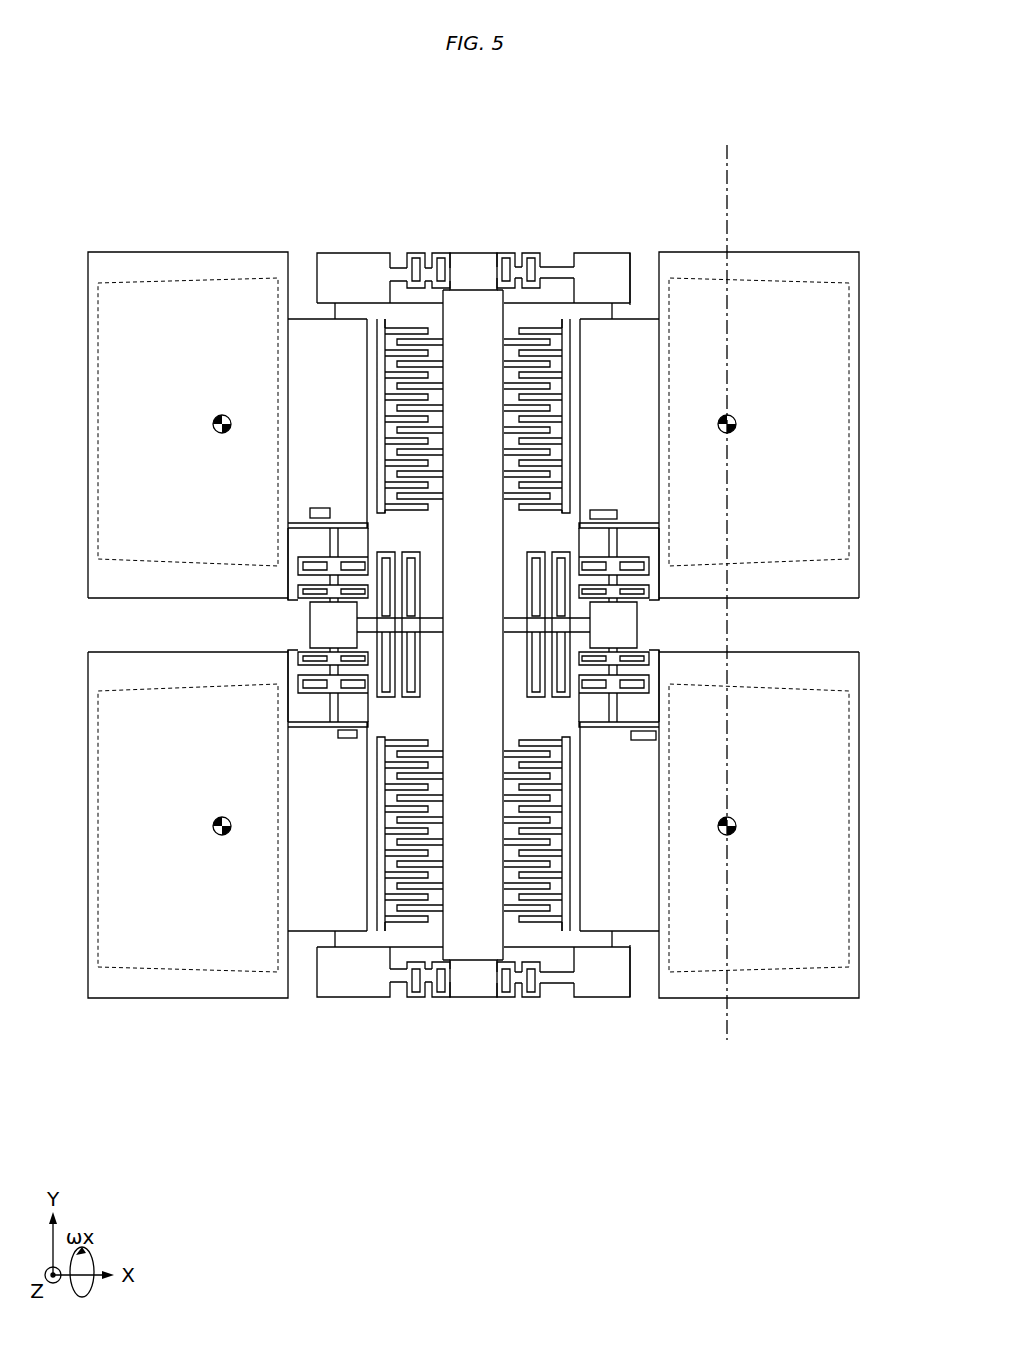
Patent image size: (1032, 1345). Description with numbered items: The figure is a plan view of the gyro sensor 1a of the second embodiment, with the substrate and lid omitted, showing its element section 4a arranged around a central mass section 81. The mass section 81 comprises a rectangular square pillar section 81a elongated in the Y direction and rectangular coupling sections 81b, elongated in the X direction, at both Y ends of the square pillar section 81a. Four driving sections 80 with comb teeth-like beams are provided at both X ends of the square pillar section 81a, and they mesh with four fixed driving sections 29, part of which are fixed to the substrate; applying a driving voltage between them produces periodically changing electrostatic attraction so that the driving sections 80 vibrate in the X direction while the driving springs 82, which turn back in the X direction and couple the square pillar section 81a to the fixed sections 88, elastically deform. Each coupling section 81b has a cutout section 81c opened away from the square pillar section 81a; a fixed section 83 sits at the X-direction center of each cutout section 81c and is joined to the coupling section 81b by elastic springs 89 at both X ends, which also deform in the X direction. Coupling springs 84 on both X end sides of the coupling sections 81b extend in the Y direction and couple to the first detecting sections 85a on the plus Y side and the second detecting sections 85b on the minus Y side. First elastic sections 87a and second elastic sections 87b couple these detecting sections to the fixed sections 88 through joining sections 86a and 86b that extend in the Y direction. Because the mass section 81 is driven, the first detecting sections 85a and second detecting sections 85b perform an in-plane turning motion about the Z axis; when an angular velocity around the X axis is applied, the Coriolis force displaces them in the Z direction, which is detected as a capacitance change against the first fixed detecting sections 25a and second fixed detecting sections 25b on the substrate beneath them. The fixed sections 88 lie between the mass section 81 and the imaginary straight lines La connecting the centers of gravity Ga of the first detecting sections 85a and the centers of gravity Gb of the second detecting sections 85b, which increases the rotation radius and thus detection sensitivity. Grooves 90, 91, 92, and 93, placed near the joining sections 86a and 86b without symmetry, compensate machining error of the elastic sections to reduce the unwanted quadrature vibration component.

The gyro sensor 1a is at (868, 154).
The element section 4a is at (857, 245).
The first fixed detecting sections 25a is at (133, 283).
The second fixed detecting sections 25b is at (133, 967).
The fixed driving sections 29 is at (398, 330).
The driving sections 80 is at (437, 335).
The mass section 81 is at (505, 714).
The square pillar section 81a is at (441, 712).
The coupling sections 81b is at (343, 252).
The cutout sections 81c is at (553, 303).
The driving springs 82 is at (384, 552).
The fixed sections 83 is at (473, 253).
The coupling springs 84 is at (318, 262).
The first detecting sections 85a is at (632, 253).
The second detecting sections 85b is at (632, 997).
The joining sections 86a is at (338, 535).
The joining sections 86b is at (328, 715).
The first elastic sections 87a is at (290, 565).
The second elastic sections 87b is at (302, 690).
The fixed sections 88 is at (310, 626).
The elastic springs 89 is at (415, 253).
The groove 90 is at (603, 510).
The groove 91 is at (643, 741).
The groove 92 is at (318, 508).
The groove 93 is at (347, 739).
The centers of gravity Ga is at (216, 418).
The centers of gravity Gb is at (216, 832).
The imaginary straight lines La is at (731, 152).